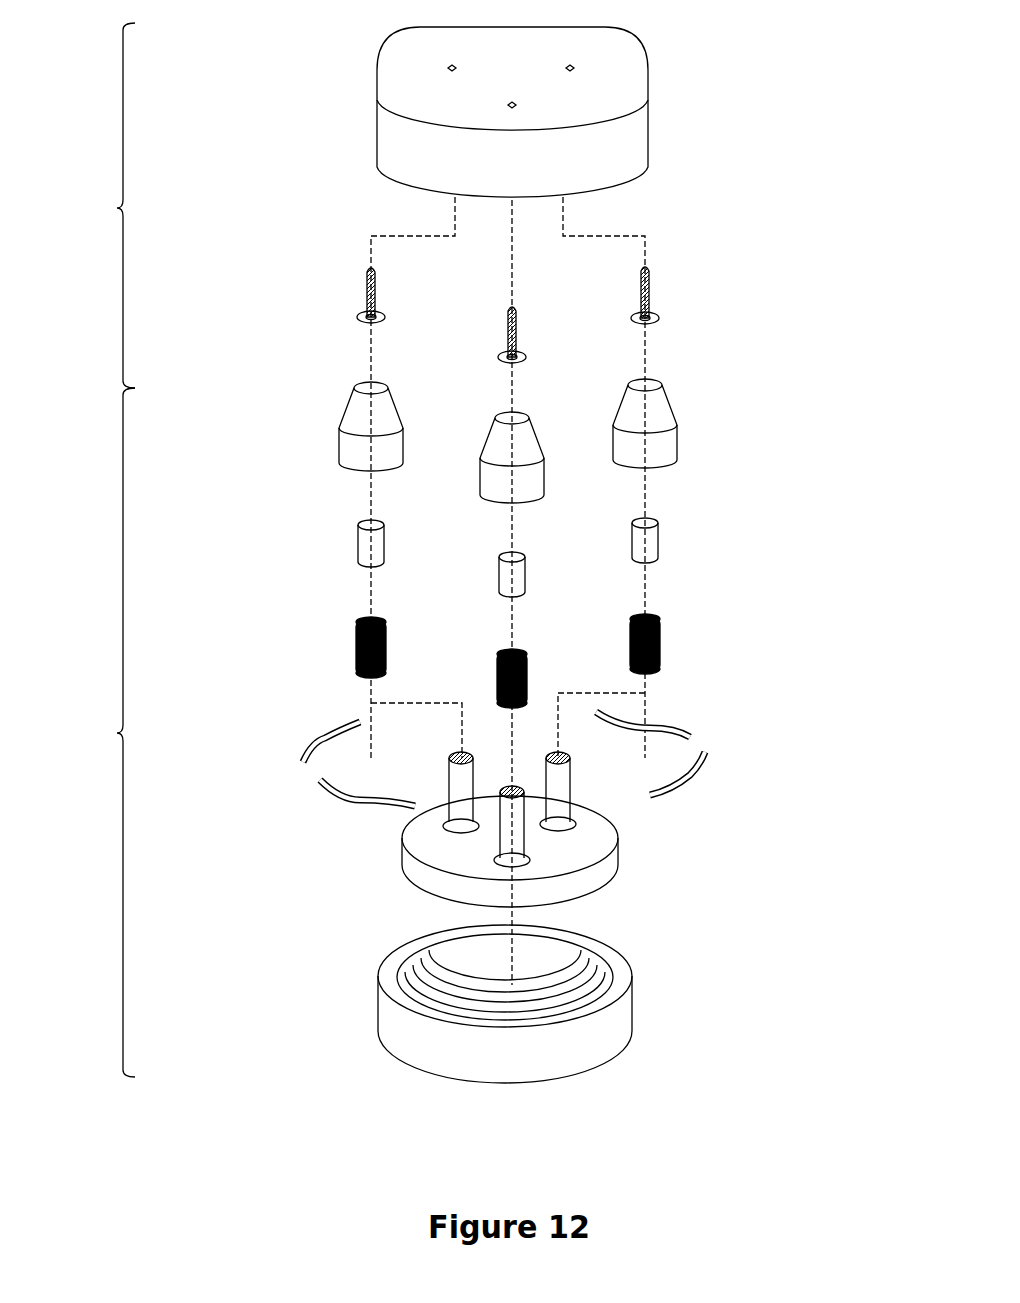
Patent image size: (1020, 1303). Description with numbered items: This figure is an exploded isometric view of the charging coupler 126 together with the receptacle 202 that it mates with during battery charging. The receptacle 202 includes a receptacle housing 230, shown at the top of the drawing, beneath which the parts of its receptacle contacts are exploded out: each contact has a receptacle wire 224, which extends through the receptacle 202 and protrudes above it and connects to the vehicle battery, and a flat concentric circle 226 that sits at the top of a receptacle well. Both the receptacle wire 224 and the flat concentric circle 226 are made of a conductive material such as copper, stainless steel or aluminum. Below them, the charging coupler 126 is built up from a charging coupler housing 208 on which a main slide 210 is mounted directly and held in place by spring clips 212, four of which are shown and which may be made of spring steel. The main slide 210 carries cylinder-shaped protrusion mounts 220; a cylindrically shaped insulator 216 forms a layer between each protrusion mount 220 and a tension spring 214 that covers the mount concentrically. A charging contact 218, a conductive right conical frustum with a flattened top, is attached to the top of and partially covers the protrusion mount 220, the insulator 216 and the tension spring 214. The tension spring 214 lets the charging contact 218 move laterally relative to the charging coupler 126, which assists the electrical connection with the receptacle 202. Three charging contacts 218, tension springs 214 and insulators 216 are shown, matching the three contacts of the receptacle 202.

The receptacle housing 230 is at (512, 112).
The receptacle wire 224 is at (650, 290).
The flat concentric circle 226 is at (655, 322).
The charging contact 218 is at (675, 410).
The insulator 216 is at (658, 538).
The tension spring 214 is at (660, 645).
The spring clip 212 is at (708, 755).
The protrusion mount 220 is at (571, 780).
The main slide 210 is at (586, 890).
The charging coupler housing 208 is at (505, 1004).
The receptacle 202 is at (92, 205).
The charging coupler 126 is at (91, 732).